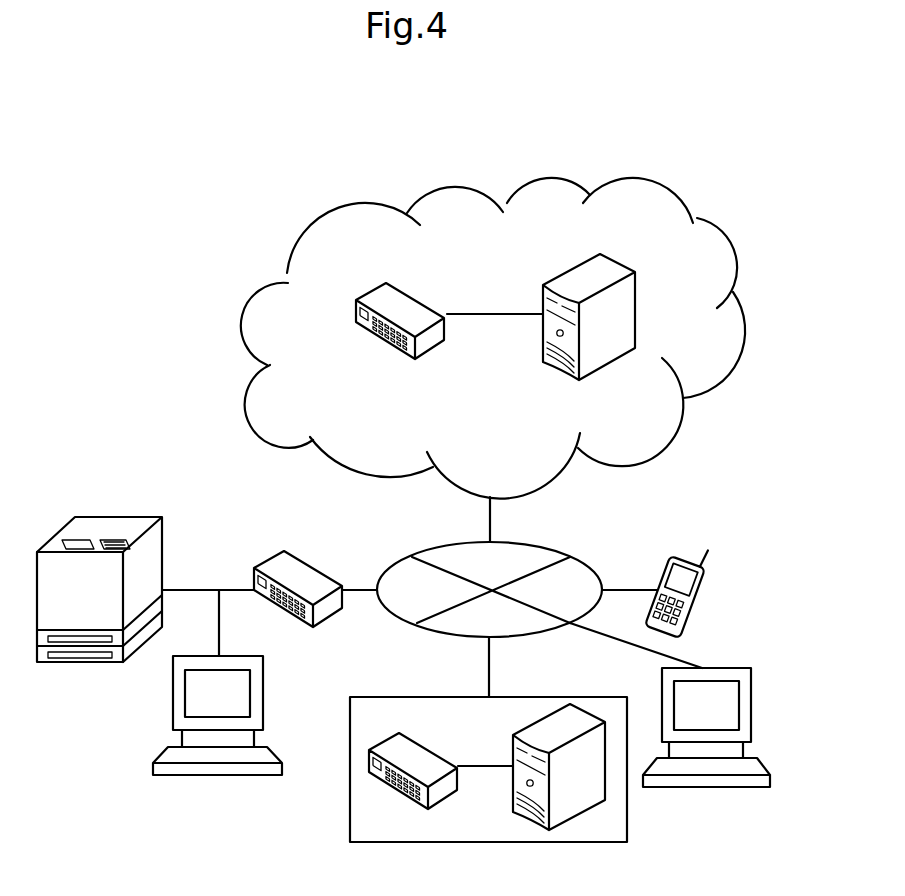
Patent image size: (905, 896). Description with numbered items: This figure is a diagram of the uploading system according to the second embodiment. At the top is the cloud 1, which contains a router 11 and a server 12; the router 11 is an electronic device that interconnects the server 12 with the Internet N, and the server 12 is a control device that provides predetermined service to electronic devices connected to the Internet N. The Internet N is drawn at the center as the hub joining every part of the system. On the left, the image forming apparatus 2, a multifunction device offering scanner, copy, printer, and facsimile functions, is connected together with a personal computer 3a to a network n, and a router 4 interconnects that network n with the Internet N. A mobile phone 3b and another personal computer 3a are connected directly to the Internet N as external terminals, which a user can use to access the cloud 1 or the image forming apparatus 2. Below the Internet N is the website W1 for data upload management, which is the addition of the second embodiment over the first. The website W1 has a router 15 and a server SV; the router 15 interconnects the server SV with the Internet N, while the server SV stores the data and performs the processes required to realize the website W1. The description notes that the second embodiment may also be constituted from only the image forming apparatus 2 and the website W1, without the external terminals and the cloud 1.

The cloud 1 is at (717, 229).
The router 11 is at (415, 293).
The server 12 is at (618, 262).
The image forming apparatus 2 is at (127, 517).
The network n is at (188, 590).
The router 4 is at (308, 560).
The Internet N is at (578, 558).
The personal computer 3a is at (263, 693).
The mobile phone 3b is at (674, 560).
The website W1 is at (565, 697).
The router 15 is at (445, 802).
The server SV is at (575, 817).